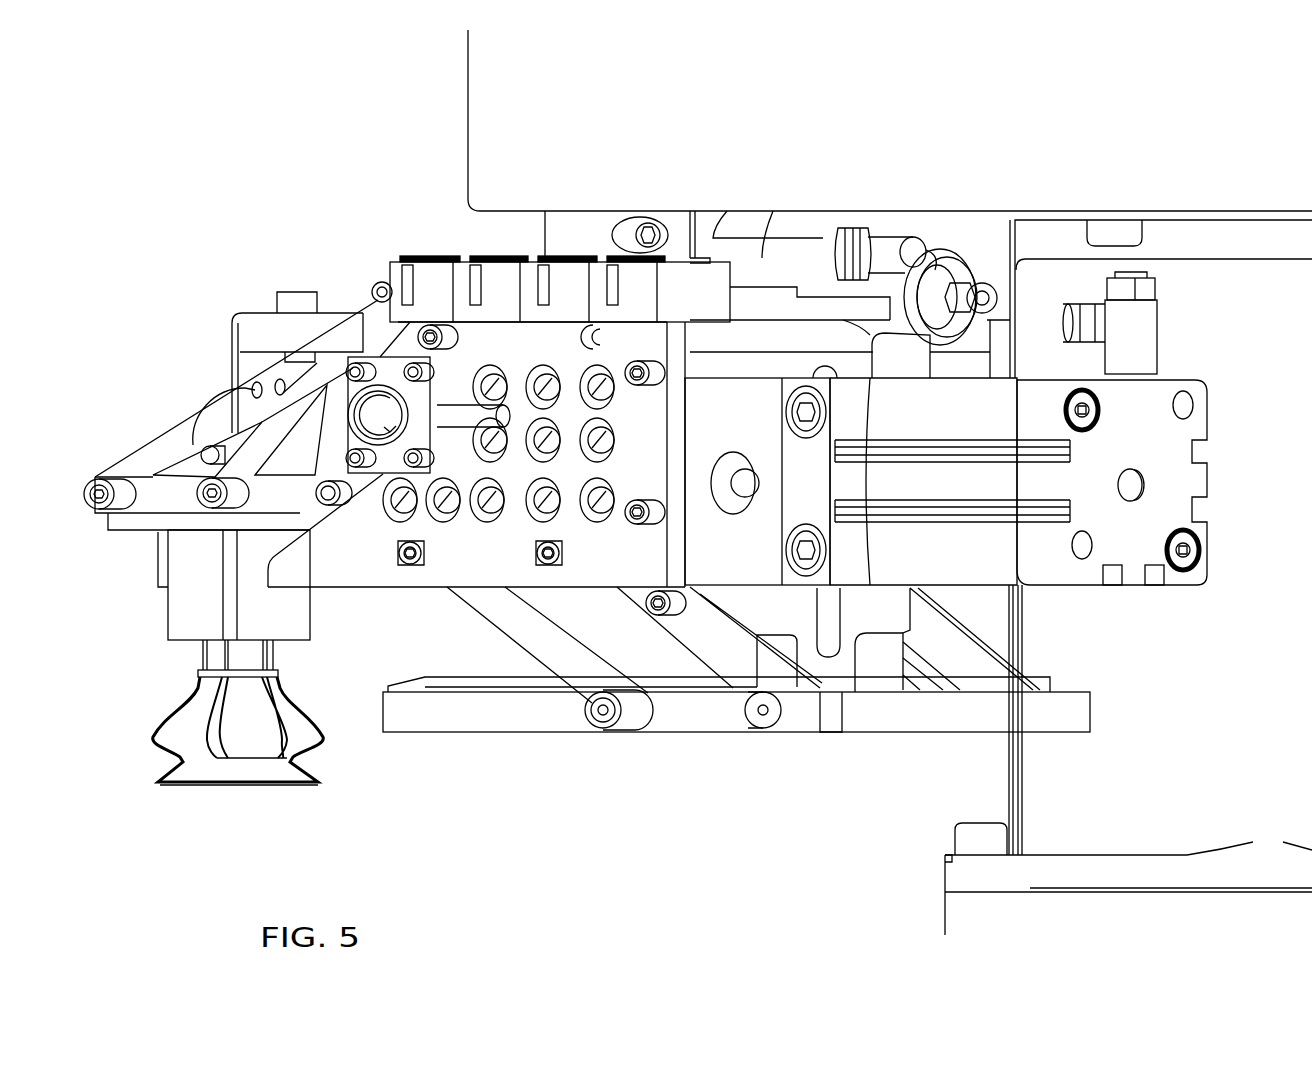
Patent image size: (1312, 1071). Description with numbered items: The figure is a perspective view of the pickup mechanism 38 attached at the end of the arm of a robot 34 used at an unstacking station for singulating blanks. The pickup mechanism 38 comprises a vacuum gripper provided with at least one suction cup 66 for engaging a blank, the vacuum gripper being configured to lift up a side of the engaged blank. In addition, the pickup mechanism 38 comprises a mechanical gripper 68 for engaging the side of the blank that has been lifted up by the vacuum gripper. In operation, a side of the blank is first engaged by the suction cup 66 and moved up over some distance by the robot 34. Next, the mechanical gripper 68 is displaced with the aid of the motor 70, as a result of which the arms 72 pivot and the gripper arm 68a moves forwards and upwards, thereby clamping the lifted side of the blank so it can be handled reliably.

The robot 34 is at (485, 167).
The pickup mechanism 38 is at (320, 240).
The suction cup 66 is at (183, 719).
The mechanical gripper 68 is at (847, 760).
The gripper arm 68a is at (445, 713).
The motor 70 is at (1178, 478).
The arms 72 is at (512, 633).